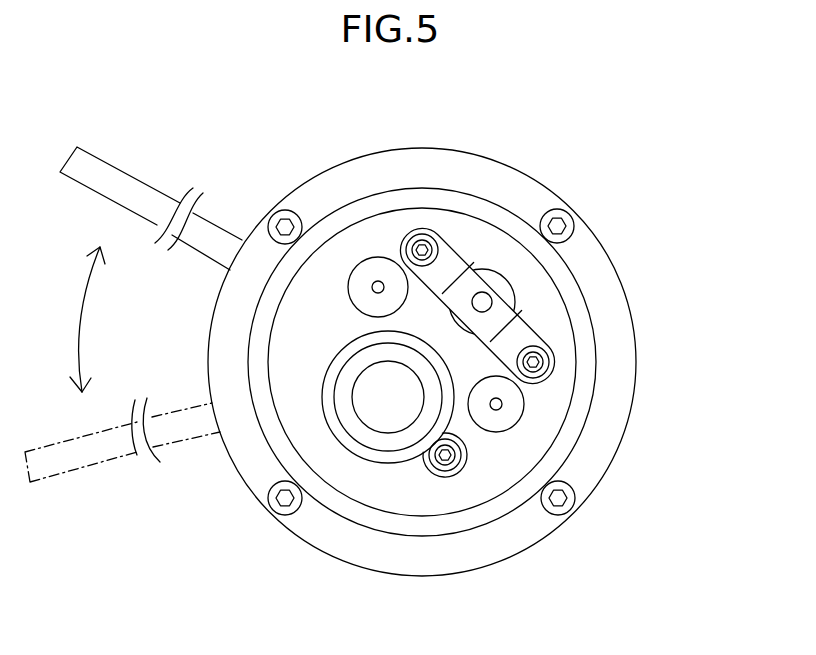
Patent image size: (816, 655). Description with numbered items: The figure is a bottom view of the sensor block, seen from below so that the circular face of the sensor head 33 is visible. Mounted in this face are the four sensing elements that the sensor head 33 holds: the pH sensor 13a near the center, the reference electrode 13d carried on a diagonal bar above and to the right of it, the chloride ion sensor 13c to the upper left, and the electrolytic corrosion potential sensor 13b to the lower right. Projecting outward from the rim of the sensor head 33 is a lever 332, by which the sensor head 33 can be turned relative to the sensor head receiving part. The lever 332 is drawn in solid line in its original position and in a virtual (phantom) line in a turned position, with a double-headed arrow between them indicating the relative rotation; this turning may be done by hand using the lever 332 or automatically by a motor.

The sensor head 33 is at (641, 262).
The lever 332 is at (116, 167).
The pH sensor 13a is at (381, 410).
The electrolytic corrosion potential sensor 13b is at (502, 404).
The chloride ion sensor 13c is at (378, 281).
The reference electrode 13d is at (486, 292).